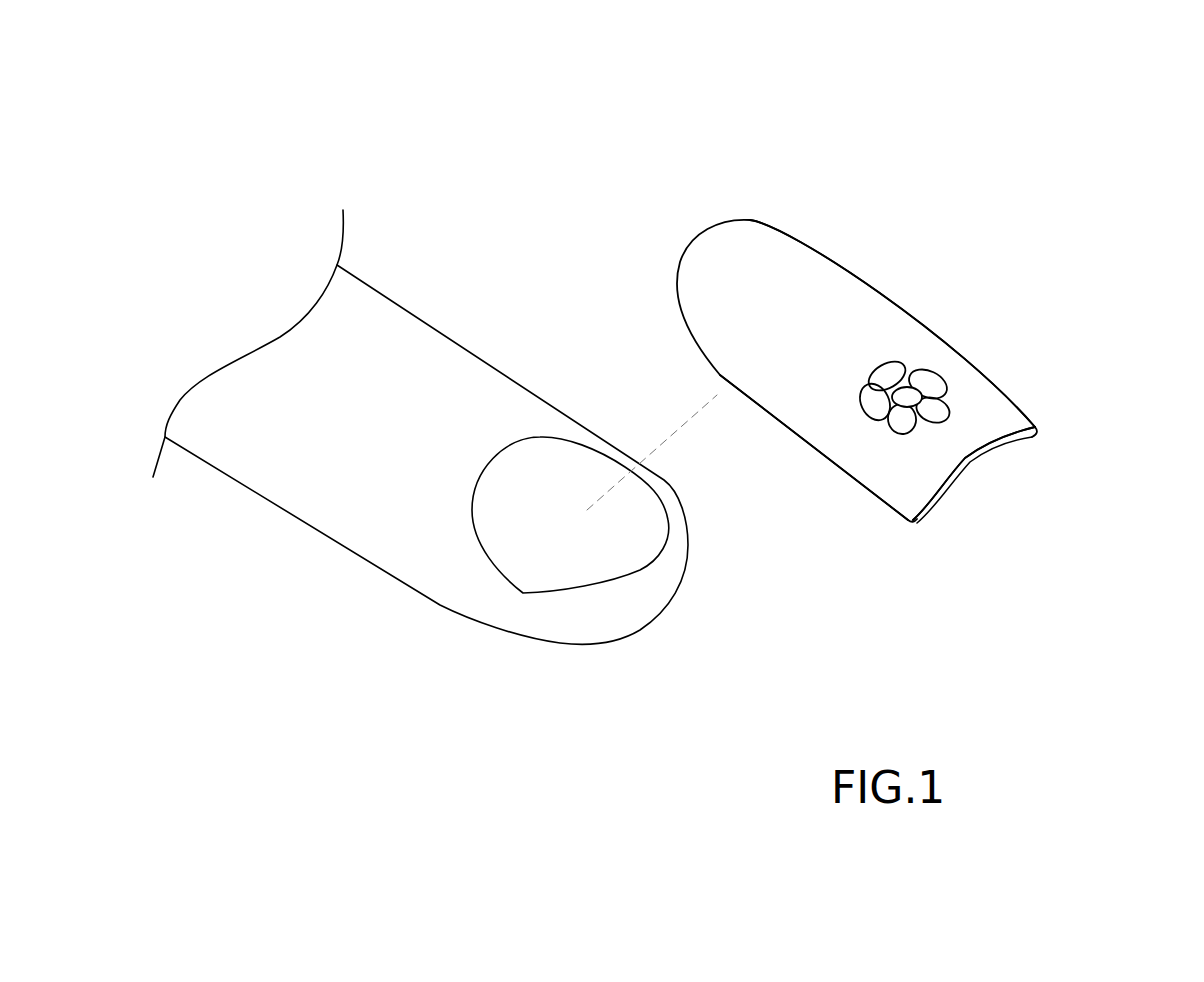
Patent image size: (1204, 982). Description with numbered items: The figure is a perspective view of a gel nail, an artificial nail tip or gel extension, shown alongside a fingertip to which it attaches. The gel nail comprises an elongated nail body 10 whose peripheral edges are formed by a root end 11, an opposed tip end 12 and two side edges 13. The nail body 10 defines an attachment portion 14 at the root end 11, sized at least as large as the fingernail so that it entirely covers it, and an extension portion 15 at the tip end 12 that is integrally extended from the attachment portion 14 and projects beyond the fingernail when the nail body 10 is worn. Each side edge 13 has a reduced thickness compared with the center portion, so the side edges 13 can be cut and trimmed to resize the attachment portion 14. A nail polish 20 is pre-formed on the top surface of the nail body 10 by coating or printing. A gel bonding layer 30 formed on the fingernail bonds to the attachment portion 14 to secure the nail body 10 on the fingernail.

The nail body 10 is at (1118, 263).
The root end 11 is at (831, 360).
The tip end 12 is at (980, 467).
The side edges 13 is at (895, 323).
The attachment portion 14 is at (746, 190).
The extension portion 15 is at (903, 296).
The nail polish 20 is at (905, 423).
The gel bonding layer 30 is at (544, 440).